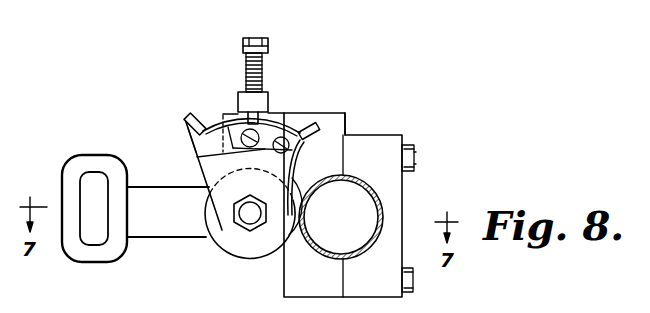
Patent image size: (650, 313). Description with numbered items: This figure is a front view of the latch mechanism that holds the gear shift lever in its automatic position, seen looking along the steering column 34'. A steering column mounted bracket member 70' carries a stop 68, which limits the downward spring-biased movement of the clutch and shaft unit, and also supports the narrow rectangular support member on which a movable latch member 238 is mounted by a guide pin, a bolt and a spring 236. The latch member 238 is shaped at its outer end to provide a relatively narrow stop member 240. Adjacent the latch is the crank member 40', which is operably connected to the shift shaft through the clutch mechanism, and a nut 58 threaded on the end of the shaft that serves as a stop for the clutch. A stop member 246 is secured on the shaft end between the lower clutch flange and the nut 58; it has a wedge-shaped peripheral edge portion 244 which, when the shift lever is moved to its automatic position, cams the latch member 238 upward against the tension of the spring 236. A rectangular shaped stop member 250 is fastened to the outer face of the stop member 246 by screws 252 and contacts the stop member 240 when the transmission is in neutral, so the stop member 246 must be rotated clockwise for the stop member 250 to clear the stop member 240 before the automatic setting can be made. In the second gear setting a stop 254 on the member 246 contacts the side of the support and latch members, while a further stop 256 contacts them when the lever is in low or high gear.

The spring 236 is at (263, 60).
The movable latch member 238 is at (239, 95).
The stop member 240 is at (260, 112).
The wedge-shaped peripheral edge portion 244 is at (218, 125).
The stop member 246 is at (189, 138).
The rectangular shaped stop member 250 is at (307, 112).
The screws 252 is at (207, 155).
The stop 254 is at (185, 121).
The stop 256 is at (346, 121).
The bracket member 70' is at (360, 205).
The steering column 34' is at (368, 217).
The crank member 40' is at (135, 212).
The nut 58 is at (243, 232).
The stop 68 is at (272, 257).